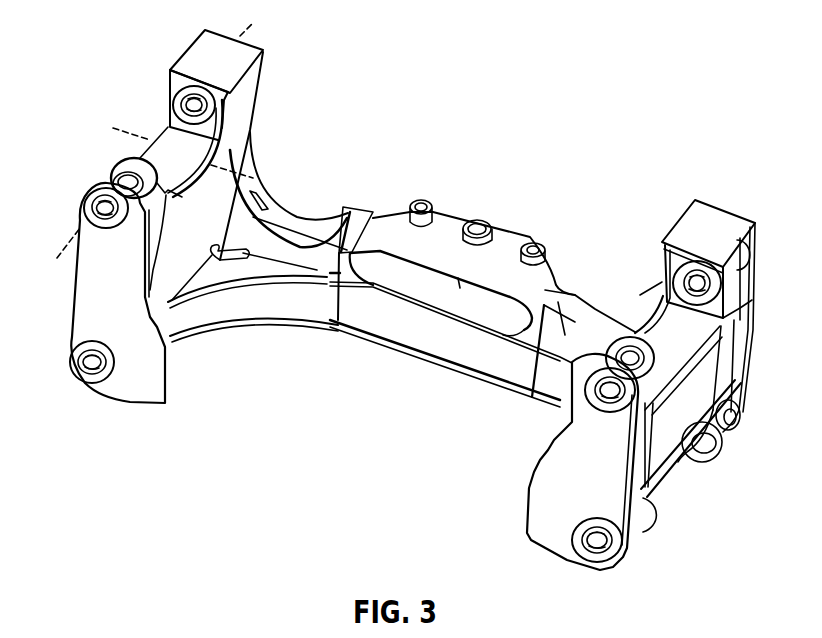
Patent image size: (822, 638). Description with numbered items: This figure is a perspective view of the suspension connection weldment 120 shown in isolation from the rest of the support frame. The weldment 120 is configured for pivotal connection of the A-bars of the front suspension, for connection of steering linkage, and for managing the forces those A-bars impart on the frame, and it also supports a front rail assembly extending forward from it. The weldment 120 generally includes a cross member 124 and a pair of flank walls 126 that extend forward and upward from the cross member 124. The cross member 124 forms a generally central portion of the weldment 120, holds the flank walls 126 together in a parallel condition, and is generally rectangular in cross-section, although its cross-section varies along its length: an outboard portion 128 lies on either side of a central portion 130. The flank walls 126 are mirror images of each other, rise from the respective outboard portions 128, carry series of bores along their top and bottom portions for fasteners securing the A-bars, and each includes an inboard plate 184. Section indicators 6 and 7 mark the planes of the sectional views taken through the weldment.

The suspension connection weldment 120 is at (566, 77).
The cross member 124 is at (692, 219).
The flank wall 126 is at (187, 15).
The outboard portion 128 is at (408, 156).
The central portion 130 is at (587, 218).
The inboard plate 184 is at (181, 250).
The section line 6- 6 is at (87, 266).
The section line 7- 7 is at (273, 154).